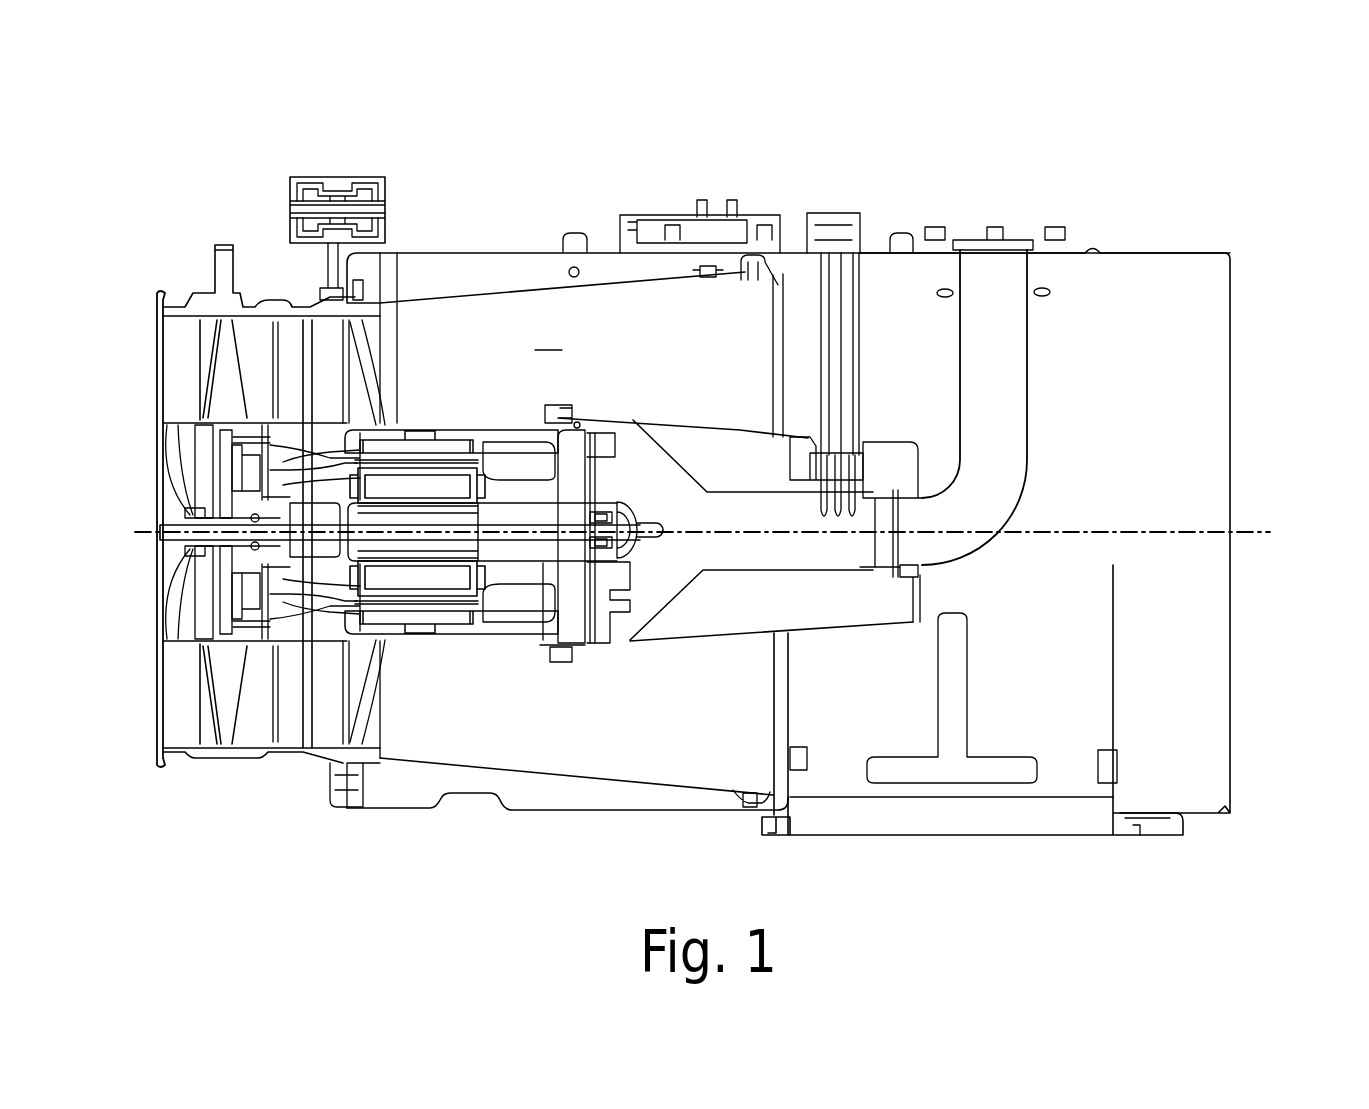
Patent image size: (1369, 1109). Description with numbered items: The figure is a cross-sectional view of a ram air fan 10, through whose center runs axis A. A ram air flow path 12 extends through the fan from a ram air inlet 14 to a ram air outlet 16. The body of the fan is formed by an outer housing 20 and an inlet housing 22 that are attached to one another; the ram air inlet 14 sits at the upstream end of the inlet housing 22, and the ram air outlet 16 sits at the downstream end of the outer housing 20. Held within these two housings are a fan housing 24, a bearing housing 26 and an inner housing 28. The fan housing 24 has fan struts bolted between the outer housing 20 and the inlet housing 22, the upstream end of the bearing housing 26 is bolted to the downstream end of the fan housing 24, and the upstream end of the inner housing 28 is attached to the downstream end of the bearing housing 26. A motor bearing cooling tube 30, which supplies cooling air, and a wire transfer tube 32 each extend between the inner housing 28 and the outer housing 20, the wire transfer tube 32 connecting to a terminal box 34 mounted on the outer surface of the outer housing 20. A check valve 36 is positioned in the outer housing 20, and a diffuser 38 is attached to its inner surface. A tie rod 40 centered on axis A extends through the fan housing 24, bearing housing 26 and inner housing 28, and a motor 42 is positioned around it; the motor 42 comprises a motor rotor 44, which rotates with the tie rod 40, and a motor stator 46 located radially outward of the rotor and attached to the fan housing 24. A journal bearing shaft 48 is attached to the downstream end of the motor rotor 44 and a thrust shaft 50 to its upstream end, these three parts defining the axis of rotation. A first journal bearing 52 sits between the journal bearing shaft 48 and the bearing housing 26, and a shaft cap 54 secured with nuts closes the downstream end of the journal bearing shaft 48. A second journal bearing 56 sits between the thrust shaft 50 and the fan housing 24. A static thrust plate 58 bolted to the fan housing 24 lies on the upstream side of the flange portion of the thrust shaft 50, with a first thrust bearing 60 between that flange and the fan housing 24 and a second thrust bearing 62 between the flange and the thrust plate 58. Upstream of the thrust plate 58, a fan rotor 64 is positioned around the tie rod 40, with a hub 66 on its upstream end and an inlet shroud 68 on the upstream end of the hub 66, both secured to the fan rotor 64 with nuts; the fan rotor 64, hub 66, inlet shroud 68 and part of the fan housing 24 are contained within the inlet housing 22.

The ram air fan 10 is at (207, 170).
The ram air flow path 12 is at (788, 437).
The ram air inlet 14 is at (157, 354).
The ram air outlet 16 is at (1232, 337).
The outer housing 20 is at (373, 808).
The inlet housing 22 is at (227, 760).
The fan housing 24 is at (398, 427).
The bearing housing 26 is at (577, 423).
The inner housing 28 is at (705, 425).
The motor bearing cooling tube 30 is at (1030, 352).
The wire transfer tube 32 is at (866, 333).
The terminal box 34 is at (720, 213).
The check valve 36 is at (990, 835).
The diffuser 38 is at (567, 773).
The tie rod 40 is at (655, 534).
The motor 42 is at (423, 636).
The motor rotor 44 is at (443, 577).
The motor stator 46 is at (457, 437).
The journal bearing shaft 48 is at (617, 500).
The thrust shaft 50 is at (268, 487).
The first journal bearing 52 is at (547, 640).
The shaft cap 54 is at (637, 500).
The second journal bearing 56 is at (303, 573).
The thrust plate 58 is at (230, 587).
The first thrust bearing 60 is at (266, 470).
The second thrust bearing 62 is at (240, 476).
The fan rotor 64 is at (220, 677).
The hub 66 is at (213, 460).
The inlet shroud 68 is at (168, 435).
The axis A is at (1268, 530).